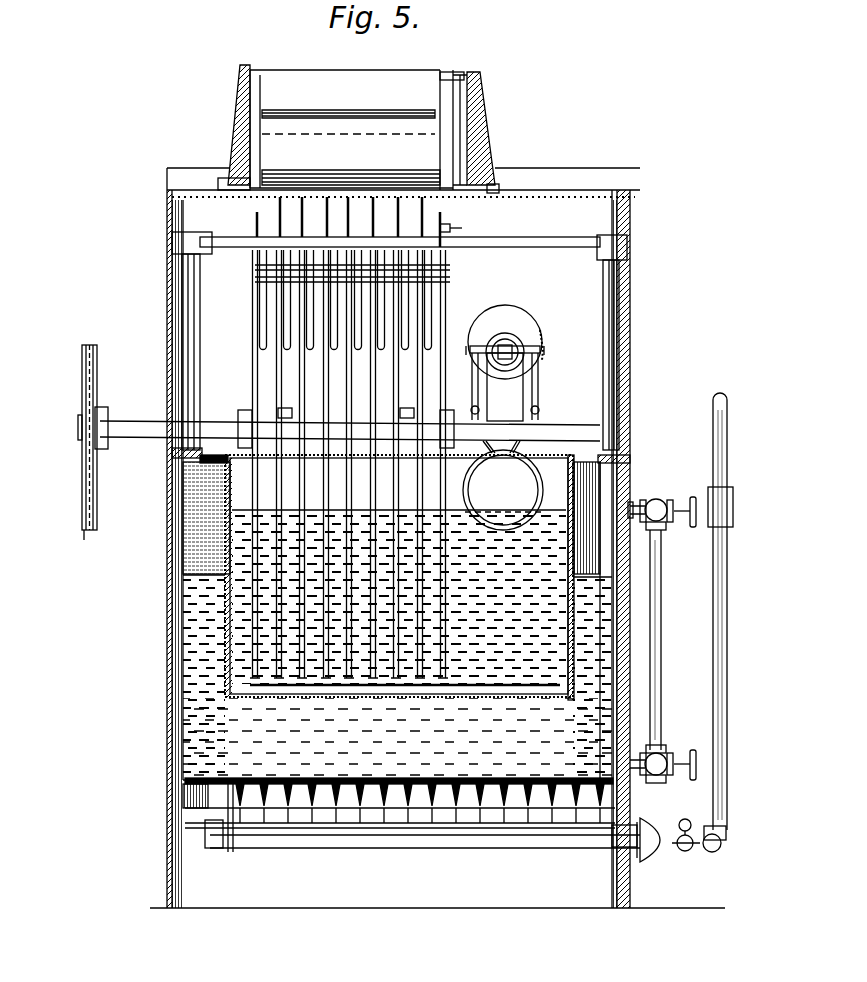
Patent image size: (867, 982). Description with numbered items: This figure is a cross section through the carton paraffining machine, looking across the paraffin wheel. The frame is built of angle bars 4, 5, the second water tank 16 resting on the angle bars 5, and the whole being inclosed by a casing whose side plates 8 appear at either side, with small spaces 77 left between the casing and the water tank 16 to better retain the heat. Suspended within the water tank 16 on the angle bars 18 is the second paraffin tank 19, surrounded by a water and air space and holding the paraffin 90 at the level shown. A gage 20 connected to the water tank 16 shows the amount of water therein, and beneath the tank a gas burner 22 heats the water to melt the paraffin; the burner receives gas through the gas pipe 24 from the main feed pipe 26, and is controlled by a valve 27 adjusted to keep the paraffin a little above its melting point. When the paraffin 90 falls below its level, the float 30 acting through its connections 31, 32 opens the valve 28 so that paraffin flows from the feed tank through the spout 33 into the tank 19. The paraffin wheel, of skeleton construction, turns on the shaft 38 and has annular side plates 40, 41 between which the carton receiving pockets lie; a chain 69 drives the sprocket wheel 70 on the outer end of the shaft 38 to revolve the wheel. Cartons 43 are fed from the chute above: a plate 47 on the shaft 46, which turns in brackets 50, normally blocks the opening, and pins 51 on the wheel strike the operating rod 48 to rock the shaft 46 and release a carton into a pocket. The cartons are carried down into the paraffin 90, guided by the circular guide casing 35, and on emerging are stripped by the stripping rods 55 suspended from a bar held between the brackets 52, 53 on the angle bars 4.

The angle bar 4 is at (174, 455).
The angle bar 5 is at (170, 790).
The side plate 8 is at (167, 633).
The second water tank 16 is at (172, 728).
The angle bar 18 is at (220, 463).
The second paraffin tank 19 is at (265, 697).
The gage 20 is at (653, 640).
The gas burner 22 is at (430, 838).
The gas pipe 24 is at (716, 852).
The main feed pipe 26 is at (713, 403).
The valve 27 is at (683, 853).
The valve 28 is at (515, 335).
The float 30 is at (503, 490).
The connection 31 is at (517, 455).
The connection 32 is at (543, 360).
The spout 33 is at (505, 405).
The circular guide casing 35 is at (342, 688).
The shaft 38 is at (125, 422).
The annular side plate 40 is at (256, 330).
The annular side plate 41 is at (437, 492).
The carton 43 is at (351, 130).
The shaft 46 is at (462, 73).
The plate 47 is at (315, 110).
The operating rod 48 is at (455, 160).
The bracket 50 is at (238, 105).
The pin 51 is at (453, 285).
The bracket 52 is at (182, 294).
The bracket 53 is at (622, 348).
The stripping rod 55 is at (317, 337).
The chain 69 is at (84, 530).
The sprocket wheel 70 is at (82, 372).
The space 77 is at (170, 596).
The paraffin 90 is at (228, 520).